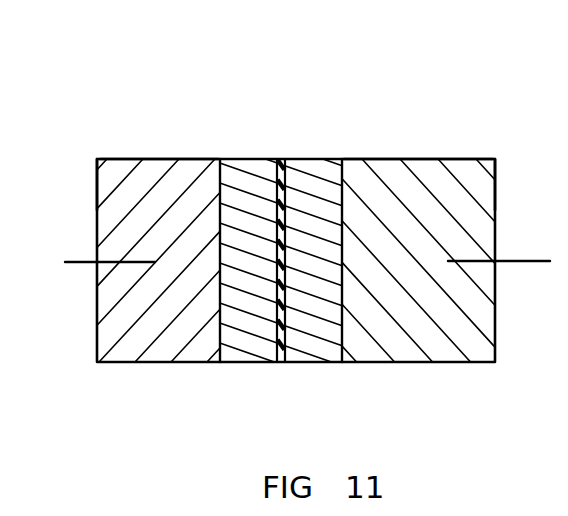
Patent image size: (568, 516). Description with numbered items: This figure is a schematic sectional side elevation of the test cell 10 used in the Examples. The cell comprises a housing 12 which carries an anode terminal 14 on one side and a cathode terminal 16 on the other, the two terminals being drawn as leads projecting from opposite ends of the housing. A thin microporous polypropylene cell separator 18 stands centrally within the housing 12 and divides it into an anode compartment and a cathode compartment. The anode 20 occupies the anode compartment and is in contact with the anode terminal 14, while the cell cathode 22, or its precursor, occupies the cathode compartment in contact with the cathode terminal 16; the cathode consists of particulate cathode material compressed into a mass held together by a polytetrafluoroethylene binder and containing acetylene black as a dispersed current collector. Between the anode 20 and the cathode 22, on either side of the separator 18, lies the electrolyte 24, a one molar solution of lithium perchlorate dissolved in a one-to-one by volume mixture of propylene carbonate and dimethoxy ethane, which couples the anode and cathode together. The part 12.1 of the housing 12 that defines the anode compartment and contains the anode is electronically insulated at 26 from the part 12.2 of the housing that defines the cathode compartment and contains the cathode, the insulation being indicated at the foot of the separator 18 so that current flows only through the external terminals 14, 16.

The test cell 10 is at (494, 72).
The housing 12 is at (97, 199).
The part of the housing defining the anode compartment 12.1 is at (166, 150).
The part of the housing defining the cathode compartment 12.2 is at (430, 150).
The anode terminal 14 is at (83, 264).
The cathode terminal 16 is at (516, 263).
The microporous polypropylene cell separator 18 is at (288, 317).
The anode 20 is at (160, 318).
The cell cathode 22 is at (437, 300).
The electrolyte 24 is at (311, 182).
The electronic insulation 26 is at (281, 380).